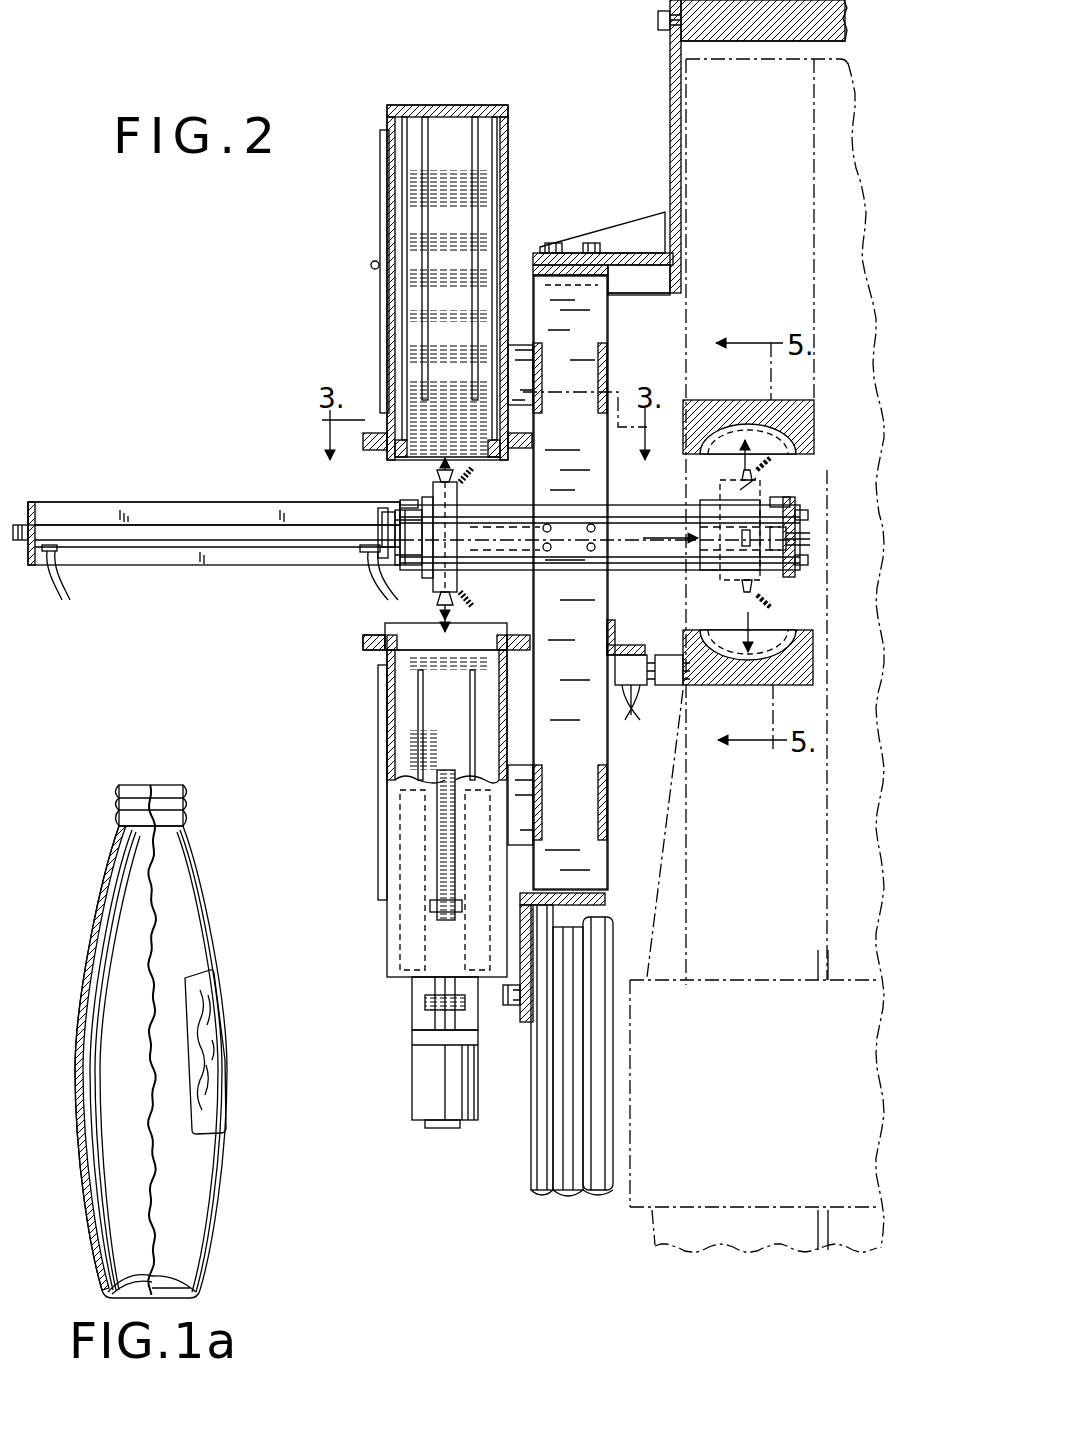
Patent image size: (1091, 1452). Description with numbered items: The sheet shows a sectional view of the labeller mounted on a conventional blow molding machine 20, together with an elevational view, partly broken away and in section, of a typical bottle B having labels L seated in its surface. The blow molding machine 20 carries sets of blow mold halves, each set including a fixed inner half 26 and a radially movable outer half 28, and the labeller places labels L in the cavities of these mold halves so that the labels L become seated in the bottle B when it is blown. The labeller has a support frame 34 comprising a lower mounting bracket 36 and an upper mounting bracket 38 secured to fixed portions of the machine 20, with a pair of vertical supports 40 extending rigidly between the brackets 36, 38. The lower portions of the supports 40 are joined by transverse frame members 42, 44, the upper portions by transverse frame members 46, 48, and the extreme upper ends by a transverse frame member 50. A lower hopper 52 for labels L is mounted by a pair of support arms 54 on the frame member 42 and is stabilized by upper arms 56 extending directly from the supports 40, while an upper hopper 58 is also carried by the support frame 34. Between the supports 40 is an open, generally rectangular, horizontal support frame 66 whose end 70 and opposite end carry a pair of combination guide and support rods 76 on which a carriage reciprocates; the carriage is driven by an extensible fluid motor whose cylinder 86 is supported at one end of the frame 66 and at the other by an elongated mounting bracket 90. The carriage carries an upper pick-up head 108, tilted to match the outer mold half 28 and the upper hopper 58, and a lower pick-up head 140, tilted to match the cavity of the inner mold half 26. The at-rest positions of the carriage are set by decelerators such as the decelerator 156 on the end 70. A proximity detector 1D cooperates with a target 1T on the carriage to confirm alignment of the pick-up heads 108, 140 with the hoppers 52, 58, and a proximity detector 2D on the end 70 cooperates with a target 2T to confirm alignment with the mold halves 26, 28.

In FIG. 2, the blow molding machine 20 is at (640, 1210).
In FIG. 2, the fixed inner mold half 26 is at (705, 685).
In FIG. 2, the radially movable outer mold half 28 is at (705, 400).
In FIG. 2, the support frame 34 is at (612, 352).
In FIG. 2, the lower mounting bracket 36 is at (518, 1027).
In FIG. 2, the upper mounting bracket 38 is at (620, 233).
In FIG. 2, the vertical supports 40 is at (583, 695).
In FIG. 2, the transverse frame member 42 is at (535, 777).
In FIG. 2, the transverse frame member 44 is at (608, 790).
In FIG. 2, the transverse frame member 46 is at (543, 400).
In FIG. 2, the transverse frame member 48 is at (607, 375).
In FIG. 2, the transverse frame member 50 is at (575, 280).
In FIG. 2, the lower hopper 52 is at (375, 935).
In FIG. 2, the support arms 54 is at (527, 857).
In FIG. 2, the upper arms 56 is at (366, 662).
In FIG. 2, the upper hopper 58 is at (512, 150).
In FIG. 2, the support frame 66 is at (670, 500).
In FIG. 2, the end of support frame 70 is at (785, 576).
In FIG. 2, the combination guide and support rods 76 is at (648, 512).
In FIG. 2, the cylinder 86 is at (173, 525).
In FIG. 2, the mounting bracket 90 is at (96, 510).
In FIG. 2, the upper pick-up head 108 is at (430, 483).
In FIG. 2, the lower pick-up head 140 is at (420, 597).
In FIG. 2, the decelerator 156 is at (812, 540).
In FIG. 2, the target 1T is at (428, 500).
In FIG. 2, the target 2T is at (462, 500).
In FIG. 2, the proximity detector 1D is at (383, 505).
In FIG. 2, the proximity detector 2D is at (790, 500).
In FIG. 1a, the bottle B is at (193, 905).
In FIG. 1a, the labels L is at (78, 1012).